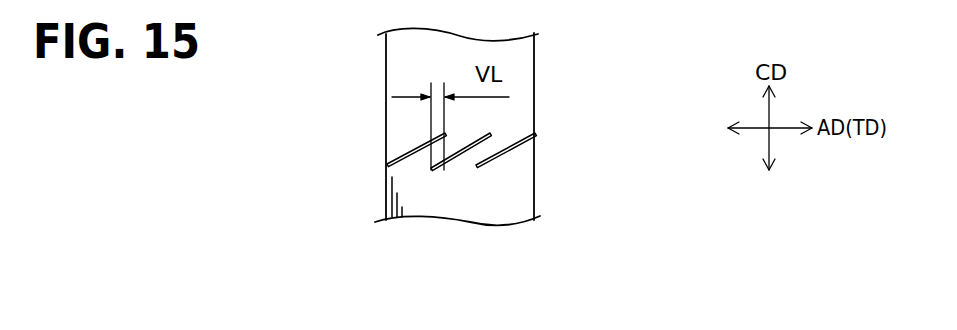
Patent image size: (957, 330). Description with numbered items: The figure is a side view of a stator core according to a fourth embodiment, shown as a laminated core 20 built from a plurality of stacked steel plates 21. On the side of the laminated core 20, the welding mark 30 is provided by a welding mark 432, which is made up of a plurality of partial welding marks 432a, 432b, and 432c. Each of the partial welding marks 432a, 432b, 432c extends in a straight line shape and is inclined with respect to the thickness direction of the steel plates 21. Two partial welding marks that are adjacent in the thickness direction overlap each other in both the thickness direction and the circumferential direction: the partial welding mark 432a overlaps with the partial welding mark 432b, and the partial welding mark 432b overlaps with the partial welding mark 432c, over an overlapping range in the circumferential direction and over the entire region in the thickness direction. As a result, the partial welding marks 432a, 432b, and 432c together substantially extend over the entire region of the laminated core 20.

The laminated core 20 is at (562, 95).
The welding mark 30 is at (448, 143).
The welding mark 432 is at (448, 143).
The partial welding mark 432a is at (403, 166).
The partial welding mark 432b is at (453, 163).
The partial welding mark 432c is at (493, 158).
The steel plates 21 is at (388, 208).